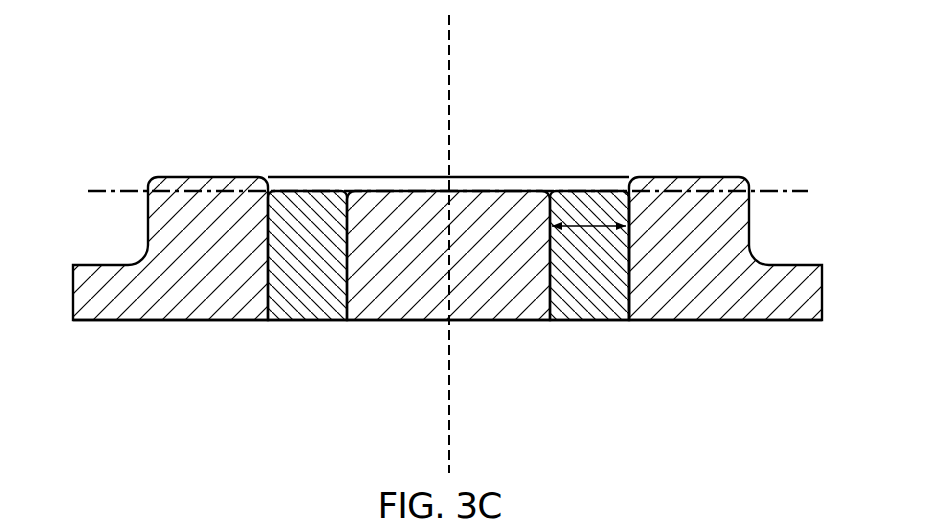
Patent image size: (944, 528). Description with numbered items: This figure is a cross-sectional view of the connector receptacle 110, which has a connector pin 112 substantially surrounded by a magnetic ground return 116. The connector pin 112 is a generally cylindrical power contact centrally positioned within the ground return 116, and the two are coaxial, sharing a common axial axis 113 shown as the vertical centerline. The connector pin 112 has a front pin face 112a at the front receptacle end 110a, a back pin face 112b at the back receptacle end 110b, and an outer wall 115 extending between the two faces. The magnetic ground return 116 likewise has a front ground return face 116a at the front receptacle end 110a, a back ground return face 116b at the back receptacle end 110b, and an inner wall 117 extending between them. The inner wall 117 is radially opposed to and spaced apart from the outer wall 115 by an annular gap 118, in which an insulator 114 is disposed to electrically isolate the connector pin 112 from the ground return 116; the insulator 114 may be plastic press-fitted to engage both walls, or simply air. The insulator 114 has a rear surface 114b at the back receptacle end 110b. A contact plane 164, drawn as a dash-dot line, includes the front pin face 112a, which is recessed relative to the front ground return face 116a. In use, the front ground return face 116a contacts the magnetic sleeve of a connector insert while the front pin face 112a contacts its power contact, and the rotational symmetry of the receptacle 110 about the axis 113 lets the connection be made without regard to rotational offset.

The connector receptacle 110 is at (447, 217).
The front receptacle end 110a is at (678, 176).
The back receptacle end 110b is at (712, 321).
The connector pin 112 is at (400, 205).
The front pin face 112a is at (498, 190).
The back pin face 112b is at (473, 320).
The axial axis 113 is at (448, 377).
The insulator 114 is at (305, 205).
The bottom surface of first intermediate member 114b is at (324, 320).
The outer wall 115 is at (552, 308).
The magnetic ground return 116 is at (188, 200).
The front ground return face 116a is at (227, 178).
The back ground return face 116b is at (153, 320).
The inner wall 117 is at (626, 306).
The annular gap 118 is at (592, 224).
The contact plane 164 is at (796, 190).